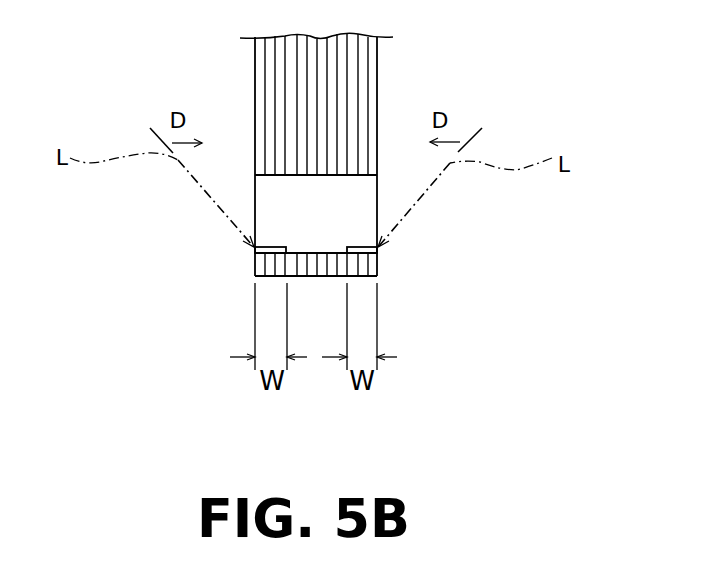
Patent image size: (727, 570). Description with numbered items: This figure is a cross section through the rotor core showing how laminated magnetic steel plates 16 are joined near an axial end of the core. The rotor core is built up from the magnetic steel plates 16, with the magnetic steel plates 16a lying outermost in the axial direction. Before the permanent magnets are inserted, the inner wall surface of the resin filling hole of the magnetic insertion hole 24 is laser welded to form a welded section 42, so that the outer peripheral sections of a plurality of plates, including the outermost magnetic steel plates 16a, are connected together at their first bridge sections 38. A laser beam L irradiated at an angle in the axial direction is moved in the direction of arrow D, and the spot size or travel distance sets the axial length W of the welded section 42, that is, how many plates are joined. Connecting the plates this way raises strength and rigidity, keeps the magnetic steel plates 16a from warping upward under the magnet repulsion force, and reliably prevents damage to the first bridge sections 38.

The magnetic insertion hole 24 is at (332, 218).
The welded section 42 is at (270, 247).
The magnetic steel plate 16 is at (338, 277).
The outermost magnetic steel plate 16a is at (254, 270).
The first bridge section 38 is at (380, 262).